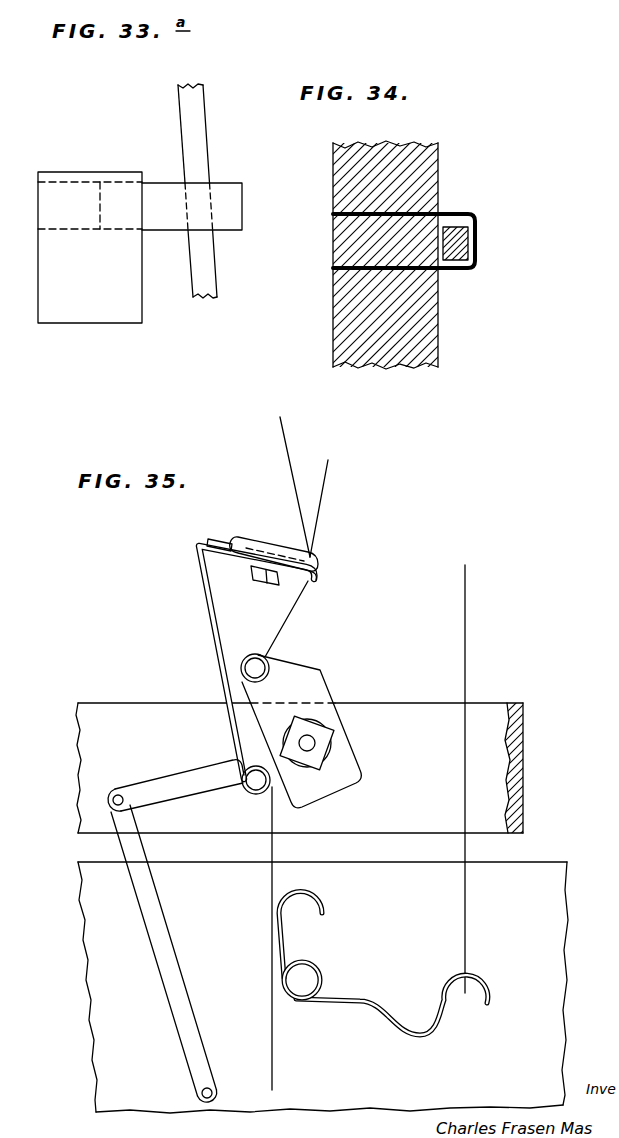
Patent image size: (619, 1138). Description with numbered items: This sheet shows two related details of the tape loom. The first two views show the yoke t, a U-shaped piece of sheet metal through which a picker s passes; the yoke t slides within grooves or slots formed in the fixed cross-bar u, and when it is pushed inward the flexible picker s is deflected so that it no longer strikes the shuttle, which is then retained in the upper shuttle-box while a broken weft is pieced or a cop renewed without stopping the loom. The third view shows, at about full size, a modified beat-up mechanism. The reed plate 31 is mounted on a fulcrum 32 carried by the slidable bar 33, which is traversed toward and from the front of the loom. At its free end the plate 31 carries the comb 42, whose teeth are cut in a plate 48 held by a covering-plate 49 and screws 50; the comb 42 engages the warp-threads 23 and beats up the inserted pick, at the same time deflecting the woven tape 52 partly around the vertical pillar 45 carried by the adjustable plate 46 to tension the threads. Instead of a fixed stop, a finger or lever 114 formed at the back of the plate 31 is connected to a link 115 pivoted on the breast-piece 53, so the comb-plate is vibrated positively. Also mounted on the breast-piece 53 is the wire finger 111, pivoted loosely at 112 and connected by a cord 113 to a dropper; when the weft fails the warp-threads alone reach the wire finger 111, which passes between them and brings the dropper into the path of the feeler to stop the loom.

In FIG. 33A, the fixed cross-bar u is at (90, 247).
In FIG. 34, the fixed cross-bar u is at (420, 175).
In FIG. 33A, the yoke t is at (232, 220).
In FIG. 34, the yoke t is at (478, 232).
In FIG. 33A, the picker s is at (202, 146).
In FIG. 34, the picker s is at (453, 248).
In FIG. 35, the warp-threads 23 is at (322, 515).
In FIG. 35, the plate 31 is at (213, 610).
In FIG. 35, the fulcrum 32 is at (252, 786).
In FIG. 35, the bar 33 is at (347, 768).
In FIG. 35, the comb 42 is at (317, 583).
In FIG. 35, the vertical pillar 45 is at (265, 660).
In FIG. 35, the plate 46 is at (313, 682).
In FIG. 35, the plate 48 is at (223, 526).
In FIG. 35, the covering-plate 49 is at (274, 544).
In FIG. 35, the screws 50 is at (270, 580).
In FIG. 35, the woven tape 52 is at (268, 1026).
In FIG. 35, the breast-piece 53 is at (323, 987).
In FIG. 35, the wire finger 111 is at (375, 997).
In FIG. 35, the pivot 112 is at (300, 993).
In FIG. 35, the cord 113 is at (463, 803).
In FIG. 35, the finger or lever 114 is at (192, 758).
In FIG. 35, the link 115 is at (162, 933).